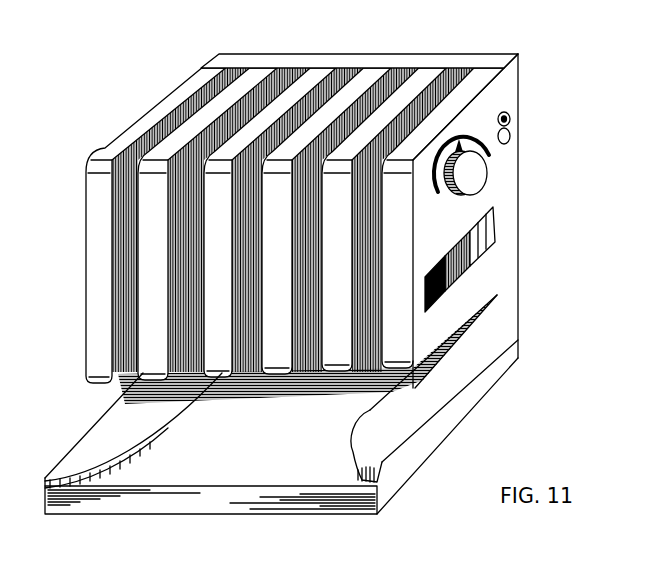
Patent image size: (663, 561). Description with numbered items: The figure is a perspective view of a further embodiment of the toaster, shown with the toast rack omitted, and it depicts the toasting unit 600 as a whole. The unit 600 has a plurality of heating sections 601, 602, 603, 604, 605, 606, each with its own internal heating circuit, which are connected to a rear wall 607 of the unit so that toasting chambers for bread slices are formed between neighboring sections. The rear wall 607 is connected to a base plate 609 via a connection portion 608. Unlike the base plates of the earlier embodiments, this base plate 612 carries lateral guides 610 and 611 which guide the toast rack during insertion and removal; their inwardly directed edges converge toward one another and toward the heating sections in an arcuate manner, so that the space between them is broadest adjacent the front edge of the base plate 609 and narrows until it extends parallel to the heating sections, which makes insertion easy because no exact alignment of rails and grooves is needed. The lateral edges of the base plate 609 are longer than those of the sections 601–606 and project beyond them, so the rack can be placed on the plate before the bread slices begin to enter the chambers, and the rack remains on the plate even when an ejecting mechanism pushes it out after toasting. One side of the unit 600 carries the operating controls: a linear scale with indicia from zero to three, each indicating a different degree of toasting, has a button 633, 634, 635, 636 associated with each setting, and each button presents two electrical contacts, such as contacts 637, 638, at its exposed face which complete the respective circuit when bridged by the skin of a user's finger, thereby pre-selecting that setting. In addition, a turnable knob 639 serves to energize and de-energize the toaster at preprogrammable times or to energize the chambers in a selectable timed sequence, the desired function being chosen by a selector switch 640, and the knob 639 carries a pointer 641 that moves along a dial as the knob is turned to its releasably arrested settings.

The toasting unit 600 is at (333, 211).
The heating section 601 is at (155, 110).
The heating section 602 is at (163, 157).
The heating section 603 is at (216, 180).
The heating section 604 is at (280, 196).
The heating section 605 is at (343, 207).
The heating section 606 is at (493, 221).
The rear wall 607 is at (373, 57).
The connection portion 608 is at (515, 313).
The base plate 609 is at (477, 402).
The lateral guide 610 is at (378, 441).
The lateral guide 611 is at (98, 447).
The base plate 612 is at (222, 505).
The button 633 is at (440, 298).
The button 634 is at (457, 283).
The button 635 is at (467, 262).
The button 636 is at (475, 247).
The electrical contact 637 is at (487, 218).
The electrical contact 638 is at (481, 231).
The turnable knob 639 is at (479, 168).
The selector switch 640 is at (511, 123).
The pointer 641 is at (461, 147).